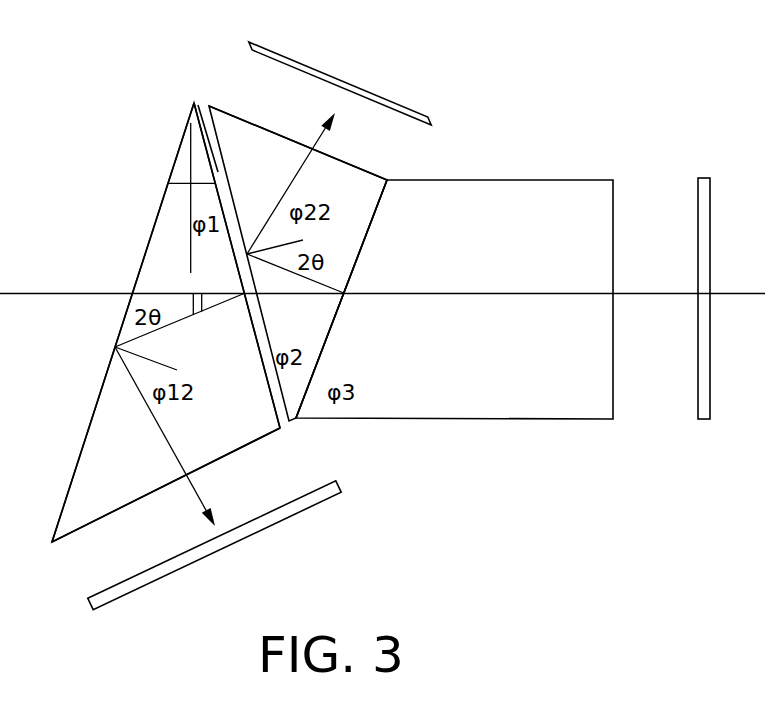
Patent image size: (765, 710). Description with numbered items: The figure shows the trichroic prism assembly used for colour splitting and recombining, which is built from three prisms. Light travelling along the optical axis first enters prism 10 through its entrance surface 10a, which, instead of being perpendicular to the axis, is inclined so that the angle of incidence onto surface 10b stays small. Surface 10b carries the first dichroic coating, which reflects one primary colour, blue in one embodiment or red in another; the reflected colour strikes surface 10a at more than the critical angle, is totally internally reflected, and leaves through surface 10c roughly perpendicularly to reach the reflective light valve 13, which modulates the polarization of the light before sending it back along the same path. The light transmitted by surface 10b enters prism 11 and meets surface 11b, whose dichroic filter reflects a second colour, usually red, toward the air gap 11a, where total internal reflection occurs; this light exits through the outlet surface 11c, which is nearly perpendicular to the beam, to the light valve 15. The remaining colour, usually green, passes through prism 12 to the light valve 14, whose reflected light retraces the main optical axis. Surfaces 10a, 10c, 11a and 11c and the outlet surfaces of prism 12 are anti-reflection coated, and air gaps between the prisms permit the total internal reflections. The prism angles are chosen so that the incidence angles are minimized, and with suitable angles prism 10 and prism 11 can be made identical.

The prism 10 is at (131, 466).
The entrance surface 10a is at (76, 432).
The surface 10b is at (204, 190).
The surface 10c is at (112, 511).
The prism 11 is at (265, 181).
The air gap 11a is at (203, 105).
The surface 11b is at (366, 278).
The outlet surface 11c is at (250, 102).
The prism 12 is at (492, 349).
The reflective light valve 13 is at (310, 508).
The light valve 14 is at (710, 207).
The light valve 15 is at (353, 82).